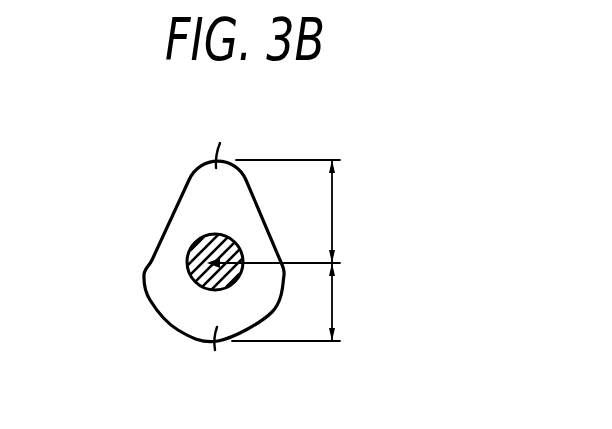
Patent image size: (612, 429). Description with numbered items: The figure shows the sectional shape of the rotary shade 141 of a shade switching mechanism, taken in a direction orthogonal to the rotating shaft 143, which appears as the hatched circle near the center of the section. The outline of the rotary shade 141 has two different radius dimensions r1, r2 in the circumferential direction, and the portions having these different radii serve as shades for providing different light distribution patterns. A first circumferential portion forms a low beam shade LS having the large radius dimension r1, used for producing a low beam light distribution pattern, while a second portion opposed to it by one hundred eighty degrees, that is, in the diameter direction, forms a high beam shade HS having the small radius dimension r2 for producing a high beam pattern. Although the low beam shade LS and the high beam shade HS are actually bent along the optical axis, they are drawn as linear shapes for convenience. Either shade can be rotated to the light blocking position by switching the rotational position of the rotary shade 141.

The rotary shade 141 is at (168, 237).
The rotating shaft 143 is at (193, 283).
The low beam shade LS is at (221, 138).
The high beam shade HS is at (214, 358).
The radius dimension r1 is at (282, 214).
The radius dimension r2 is at (295, 302).